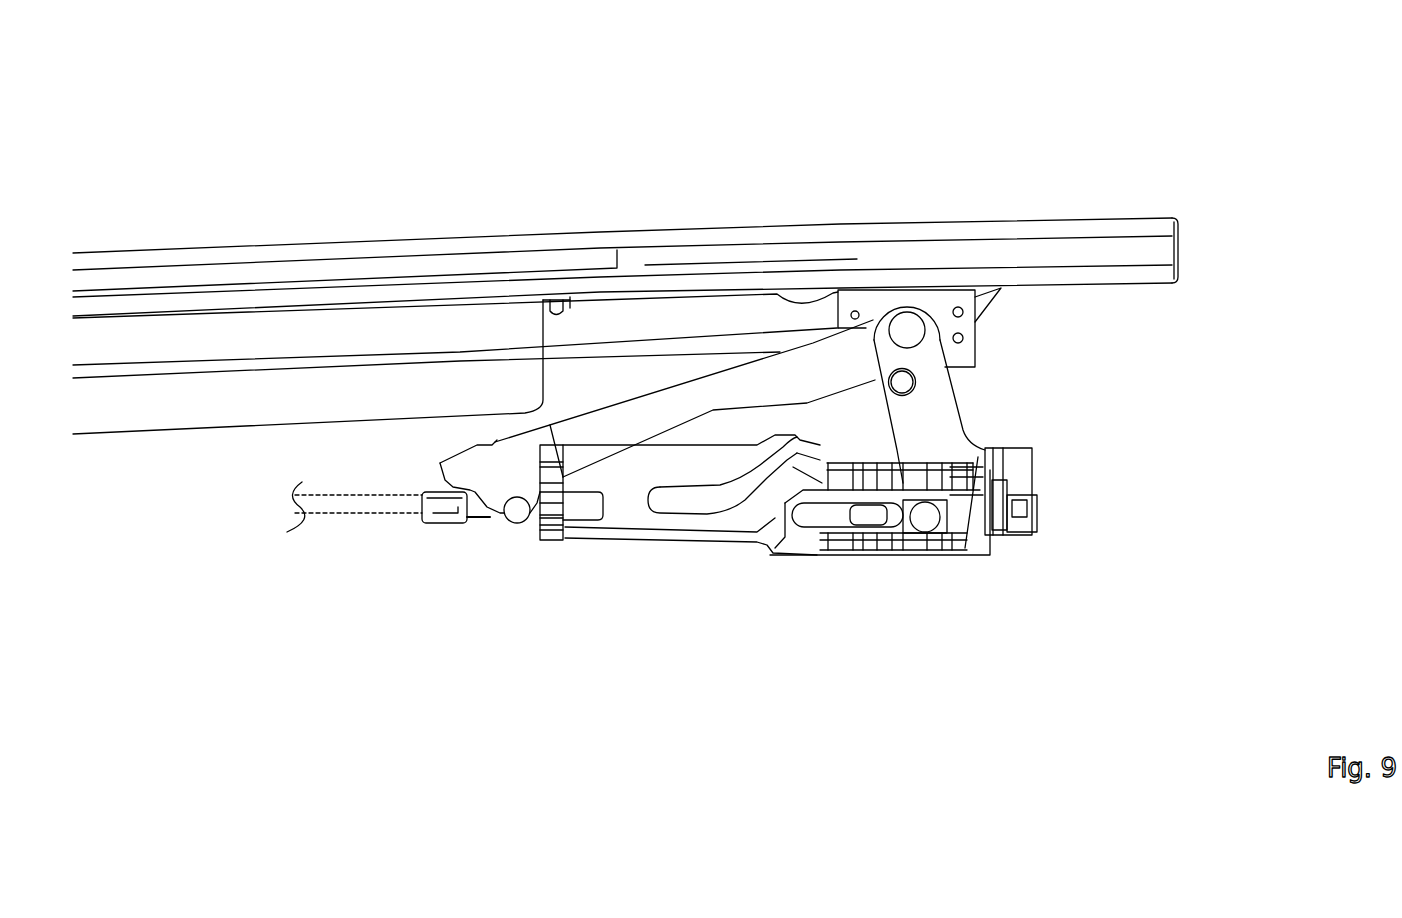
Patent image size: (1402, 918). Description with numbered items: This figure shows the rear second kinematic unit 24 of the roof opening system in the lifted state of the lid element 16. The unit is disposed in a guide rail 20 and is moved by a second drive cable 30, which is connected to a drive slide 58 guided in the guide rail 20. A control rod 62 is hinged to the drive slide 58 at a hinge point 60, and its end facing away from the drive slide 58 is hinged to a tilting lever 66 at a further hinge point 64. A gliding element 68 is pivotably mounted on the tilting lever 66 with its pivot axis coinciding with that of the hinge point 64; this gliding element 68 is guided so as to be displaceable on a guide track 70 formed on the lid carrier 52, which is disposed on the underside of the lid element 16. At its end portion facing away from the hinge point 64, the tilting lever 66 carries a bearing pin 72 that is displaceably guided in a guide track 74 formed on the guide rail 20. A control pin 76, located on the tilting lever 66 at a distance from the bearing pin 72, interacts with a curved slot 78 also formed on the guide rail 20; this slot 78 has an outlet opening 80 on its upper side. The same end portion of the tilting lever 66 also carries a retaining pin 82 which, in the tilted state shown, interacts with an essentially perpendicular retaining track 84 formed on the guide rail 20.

The lid element 16 is at (296, 250).
The lid carrier 52 is at (567, 327).
The guide track 70 is at (595, 347).
The control rod 62 is at (728, 377).
The hinge point 64 is at (903, 320).
The gliding element 68 is at (960, 307).
The control pin 76 is at (905, 382).
The tilting lever 66 is at (927, 402).
The rear second kinematic unit 24 is at (967, 430).
The outlet opening 80 is at (795, 462).
The slot 78 is at (673, 503).
The guide rail 20 is at (590, 542).
The hinge point 60 is at (520, 507).
The second drive cable 30 is at (350, 507).
The drive slide 58 is at (448, 513).
The guide track 74 is at (815, 505).
The bearing pin 72 is at (925, 518).
The retaining pin 82 is at (990, 533).
The retaining track 84 is at (985, 548).